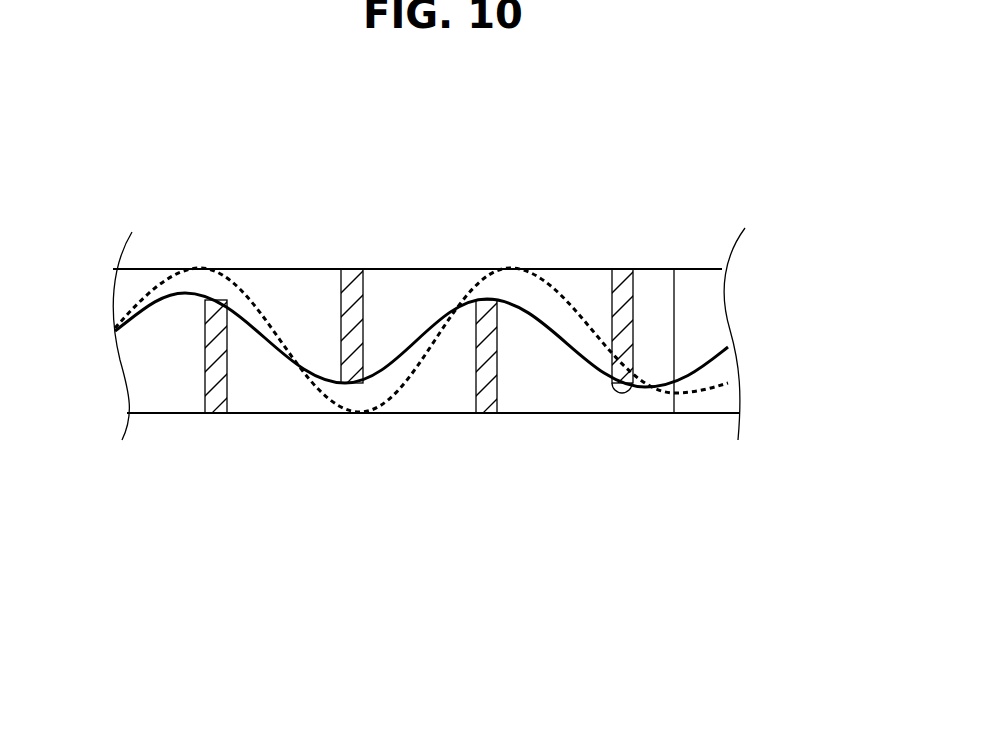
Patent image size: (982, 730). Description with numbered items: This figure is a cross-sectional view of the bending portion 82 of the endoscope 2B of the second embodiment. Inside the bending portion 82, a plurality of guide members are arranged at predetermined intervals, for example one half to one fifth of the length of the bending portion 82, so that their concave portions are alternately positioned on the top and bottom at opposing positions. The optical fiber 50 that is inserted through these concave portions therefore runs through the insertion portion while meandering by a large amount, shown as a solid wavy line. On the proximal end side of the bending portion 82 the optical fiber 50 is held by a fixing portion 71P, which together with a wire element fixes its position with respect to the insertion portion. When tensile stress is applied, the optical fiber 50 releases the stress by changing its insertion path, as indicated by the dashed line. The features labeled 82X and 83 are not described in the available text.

The endoscope 2B is at (549, 152).
The bending portion 82 is at (421, 269).
The partition wall 82X is at (355, 269).
The substrate 83 is at (700, 269).
The optical fiber 50 is at (377, 370).
The fixing portion 71P is at (620, 393).